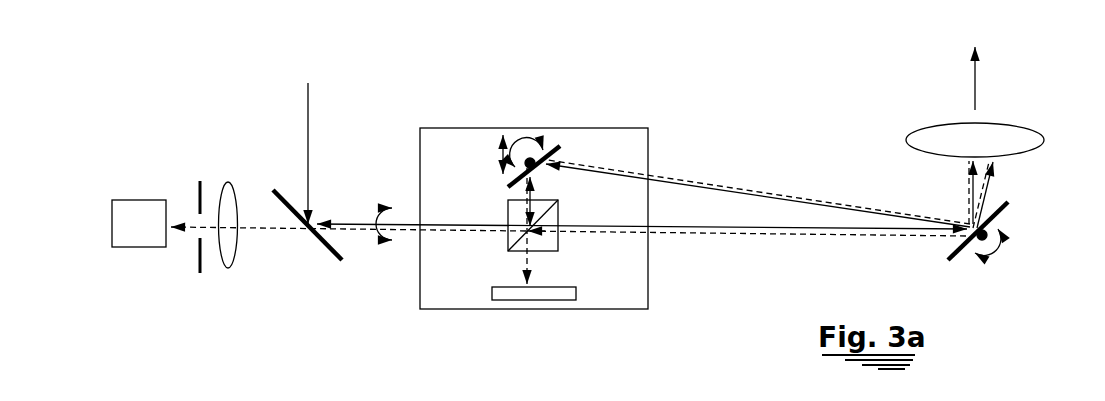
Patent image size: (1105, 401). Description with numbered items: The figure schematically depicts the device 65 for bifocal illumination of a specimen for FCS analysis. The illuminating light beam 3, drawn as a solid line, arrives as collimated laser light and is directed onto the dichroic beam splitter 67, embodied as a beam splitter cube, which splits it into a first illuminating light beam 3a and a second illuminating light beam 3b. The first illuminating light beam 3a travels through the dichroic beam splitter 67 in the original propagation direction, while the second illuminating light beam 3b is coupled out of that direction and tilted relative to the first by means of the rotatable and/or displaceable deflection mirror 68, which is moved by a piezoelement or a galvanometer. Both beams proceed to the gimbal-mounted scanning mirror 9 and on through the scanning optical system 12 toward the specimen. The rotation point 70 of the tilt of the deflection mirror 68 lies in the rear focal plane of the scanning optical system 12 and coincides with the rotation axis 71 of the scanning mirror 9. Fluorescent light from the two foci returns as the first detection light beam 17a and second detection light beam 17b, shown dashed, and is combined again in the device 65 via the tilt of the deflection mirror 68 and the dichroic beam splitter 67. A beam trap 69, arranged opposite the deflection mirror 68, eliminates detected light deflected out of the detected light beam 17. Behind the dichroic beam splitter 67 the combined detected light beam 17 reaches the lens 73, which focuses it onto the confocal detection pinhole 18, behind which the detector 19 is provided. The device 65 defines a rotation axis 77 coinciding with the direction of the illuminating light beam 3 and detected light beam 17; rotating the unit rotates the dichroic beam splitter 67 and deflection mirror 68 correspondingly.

The illuminating light beam 3 is at (309, 127).
The first illuminating light beam 3a is at (718, 230).
The second illuminating light beam 3b is at (688, 187).
The scanning mirror 9 is at (1008, 200).
The scanning optical system 12 is at (940, 130).
The detected light beam 17 is at (268, 228).
The first detection light beam 17a is at (790, 234).
The second detection light beam 17b is at (772, 168).
The detection pinhole 18 is at (200, 251).
The detector 19 is at (122, 232).
The device for bifocal illumination 65 is at (606, 97).
The dichroic beam splitter 67 is at (507, 237).
The deflection mirror 68 is at (560, 147).
The beam trap 69 is at (533, 299).
The rotation point 70 is at (967, 218).
The rotation axis 71 is at (995, 240).
The lens 73 is at (220, 183).
The rotation axis 77 is at (374, 198).